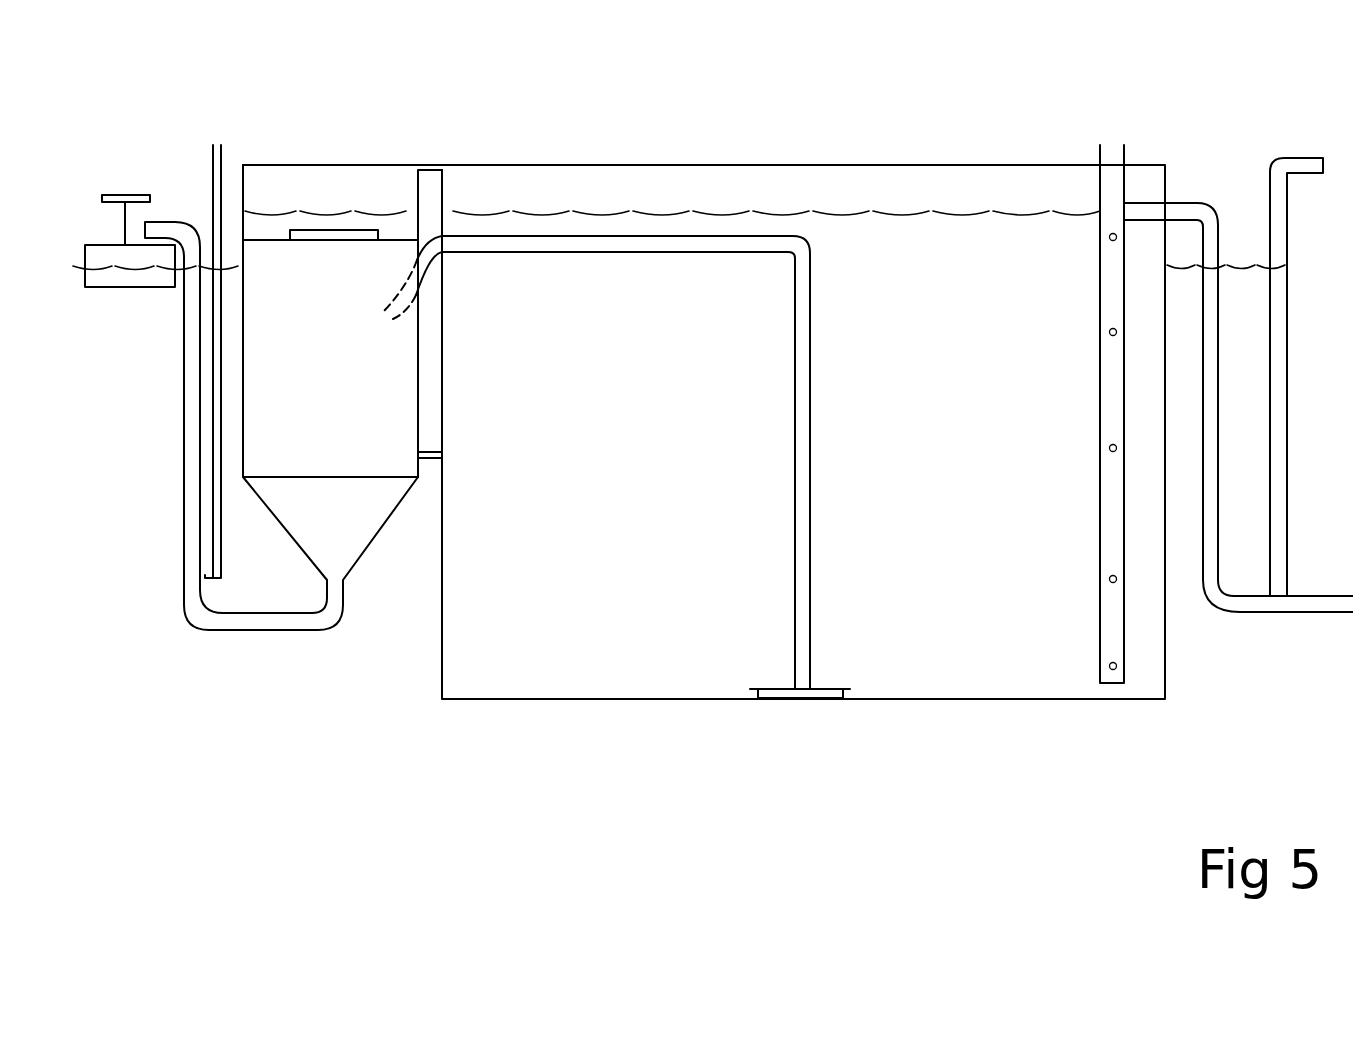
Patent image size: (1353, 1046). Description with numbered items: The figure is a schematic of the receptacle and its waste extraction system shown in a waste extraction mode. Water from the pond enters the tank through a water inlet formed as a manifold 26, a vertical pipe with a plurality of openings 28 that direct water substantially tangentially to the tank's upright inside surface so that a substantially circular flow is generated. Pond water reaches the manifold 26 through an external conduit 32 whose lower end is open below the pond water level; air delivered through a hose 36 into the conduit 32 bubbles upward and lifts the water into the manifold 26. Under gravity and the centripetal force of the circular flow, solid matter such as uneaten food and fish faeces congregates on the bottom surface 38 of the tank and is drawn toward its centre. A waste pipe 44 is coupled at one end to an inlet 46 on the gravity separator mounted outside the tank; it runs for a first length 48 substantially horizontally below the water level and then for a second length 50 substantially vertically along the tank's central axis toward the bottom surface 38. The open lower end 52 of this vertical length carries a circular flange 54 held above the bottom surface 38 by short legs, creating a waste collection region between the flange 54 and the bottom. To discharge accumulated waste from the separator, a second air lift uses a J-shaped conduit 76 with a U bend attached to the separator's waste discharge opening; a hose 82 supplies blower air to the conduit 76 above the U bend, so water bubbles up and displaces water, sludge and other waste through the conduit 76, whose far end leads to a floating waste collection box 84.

The manifold 26 is at (1100, 255).
The openings 28 is at (1108, 452).
The conduit 32 is at (1240, 613).
The hose 36 is at (1268, 232).
The bottom surface 38 is at (627, 699).
The waste pipe 44 is at (513, 237).
The inlet 46 is at (386, 317).
The first length 48 is at (597, 230).
The second length 50 is at (811, 302).
The lower end 52 is at (792, 688).
The circular flange 54 is at (825, 688).
The conduit 76 is at (193, 542).
The hose 82 is at (213, 168).
The floating waste collection box 84 is at (125, 278).